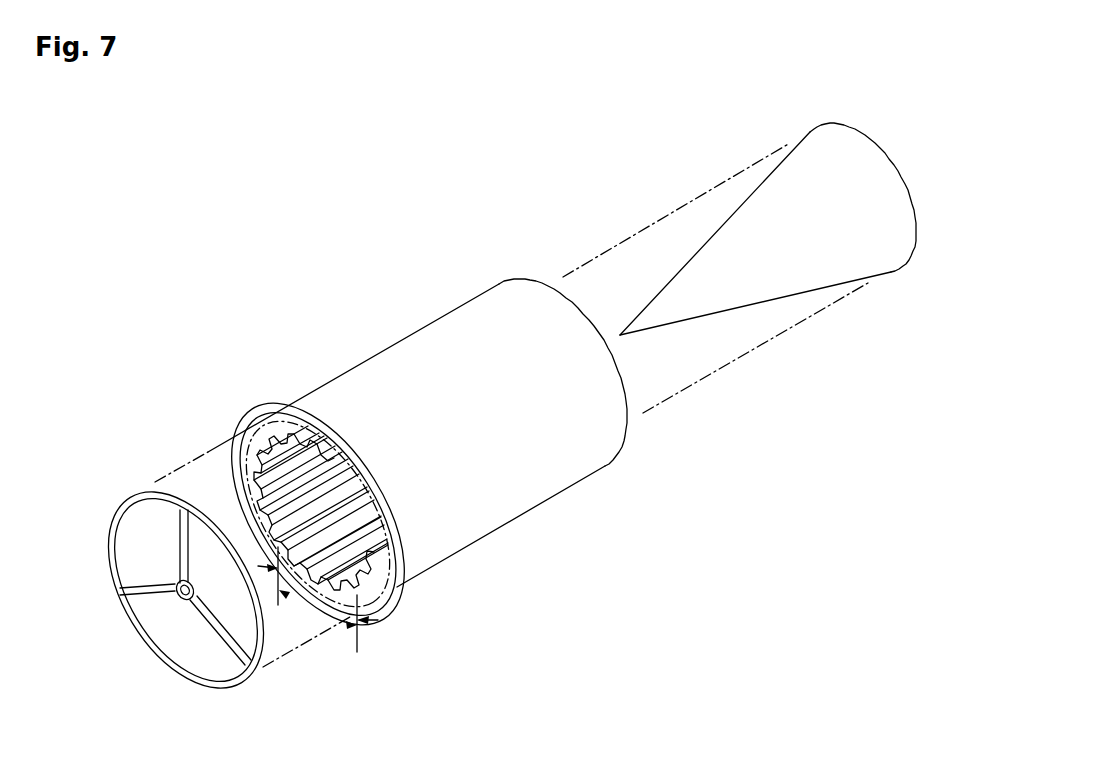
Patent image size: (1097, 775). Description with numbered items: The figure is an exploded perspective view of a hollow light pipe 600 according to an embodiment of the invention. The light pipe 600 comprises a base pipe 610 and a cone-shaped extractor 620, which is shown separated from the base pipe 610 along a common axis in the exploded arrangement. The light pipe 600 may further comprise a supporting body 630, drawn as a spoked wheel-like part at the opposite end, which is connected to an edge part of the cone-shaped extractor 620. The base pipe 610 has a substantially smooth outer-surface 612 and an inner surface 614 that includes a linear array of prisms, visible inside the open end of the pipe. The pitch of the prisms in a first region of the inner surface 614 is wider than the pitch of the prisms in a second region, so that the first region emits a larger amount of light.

The light pipe 600 is at (285, 293).
The base pipe 610 is at (422, 473).
The outer-surface 612 is at (462, 507).
The inner surface 614 is at (400, 588).
The cone-shaped extractor 620 is at (783, 292).
The supporting body 630 is at (131, 490).